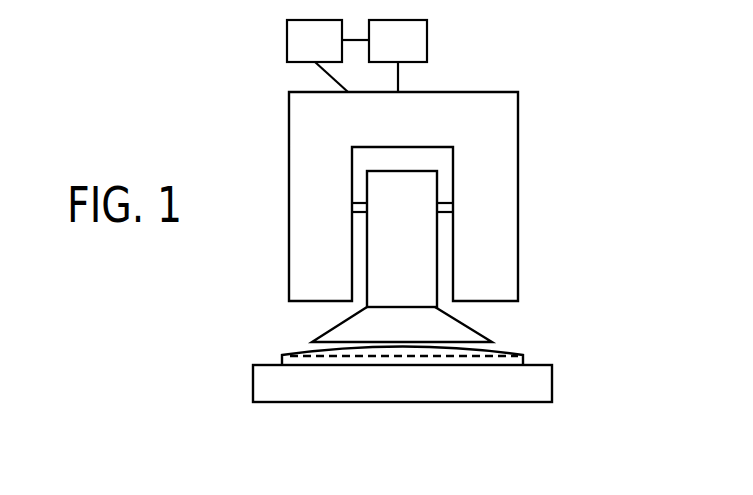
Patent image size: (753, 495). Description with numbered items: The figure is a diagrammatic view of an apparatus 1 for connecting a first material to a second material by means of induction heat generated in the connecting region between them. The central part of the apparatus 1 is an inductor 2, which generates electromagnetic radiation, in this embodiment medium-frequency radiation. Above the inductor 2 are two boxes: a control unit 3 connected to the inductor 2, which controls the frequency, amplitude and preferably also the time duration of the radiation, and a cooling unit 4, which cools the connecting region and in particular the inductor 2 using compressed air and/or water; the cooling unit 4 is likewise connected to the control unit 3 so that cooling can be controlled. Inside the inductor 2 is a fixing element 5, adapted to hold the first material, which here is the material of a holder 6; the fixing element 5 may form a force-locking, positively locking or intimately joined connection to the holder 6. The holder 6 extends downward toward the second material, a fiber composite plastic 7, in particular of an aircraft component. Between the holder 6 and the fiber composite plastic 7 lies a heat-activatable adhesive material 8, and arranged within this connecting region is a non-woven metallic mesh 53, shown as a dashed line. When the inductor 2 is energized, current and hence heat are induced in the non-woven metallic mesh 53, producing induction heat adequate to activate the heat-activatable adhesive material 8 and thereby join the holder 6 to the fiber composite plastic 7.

The apparatus for connecting a first material to a second material 1 is at (568, 78).
The inductor 2 is at (518, 163).
The control unit 3 is at (427, 29).
The cooling unit 4 is at (287, 29).
The fixing element 5 is at (357, 200).
The holder 6 is at (328, 333).
The fiber composite plastic 7 is at (253, 385).
The heat-activatable adhesive material 8 is at (510, 348).
The non-woven metallic mesh 53 is at (360, 357).